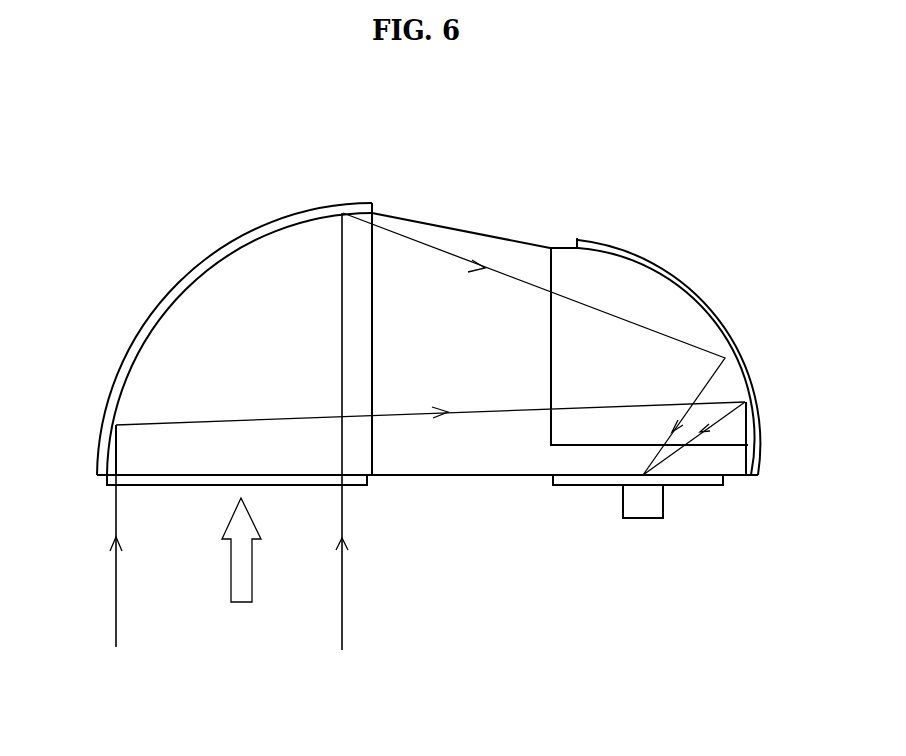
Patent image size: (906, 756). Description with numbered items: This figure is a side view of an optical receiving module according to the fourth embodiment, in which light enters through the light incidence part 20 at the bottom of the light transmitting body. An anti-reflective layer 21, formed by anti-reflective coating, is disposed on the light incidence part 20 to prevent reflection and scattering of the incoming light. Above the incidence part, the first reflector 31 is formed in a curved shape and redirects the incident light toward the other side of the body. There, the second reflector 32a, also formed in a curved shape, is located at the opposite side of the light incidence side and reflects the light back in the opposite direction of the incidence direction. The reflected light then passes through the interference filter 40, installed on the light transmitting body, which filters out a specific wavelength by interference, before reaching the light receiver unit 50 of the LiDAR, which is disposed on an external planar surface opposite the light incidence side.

The light incidence part 20 is at (145, 474).
The anti-reflective layer 21 is at (133, 480).
The first reflector 31 is at (262, 228).
The second reflector 32a is at (710, 318).
The interference filter 40 is at (580, 480).
The light receiver unit 50 is at (647, 503).